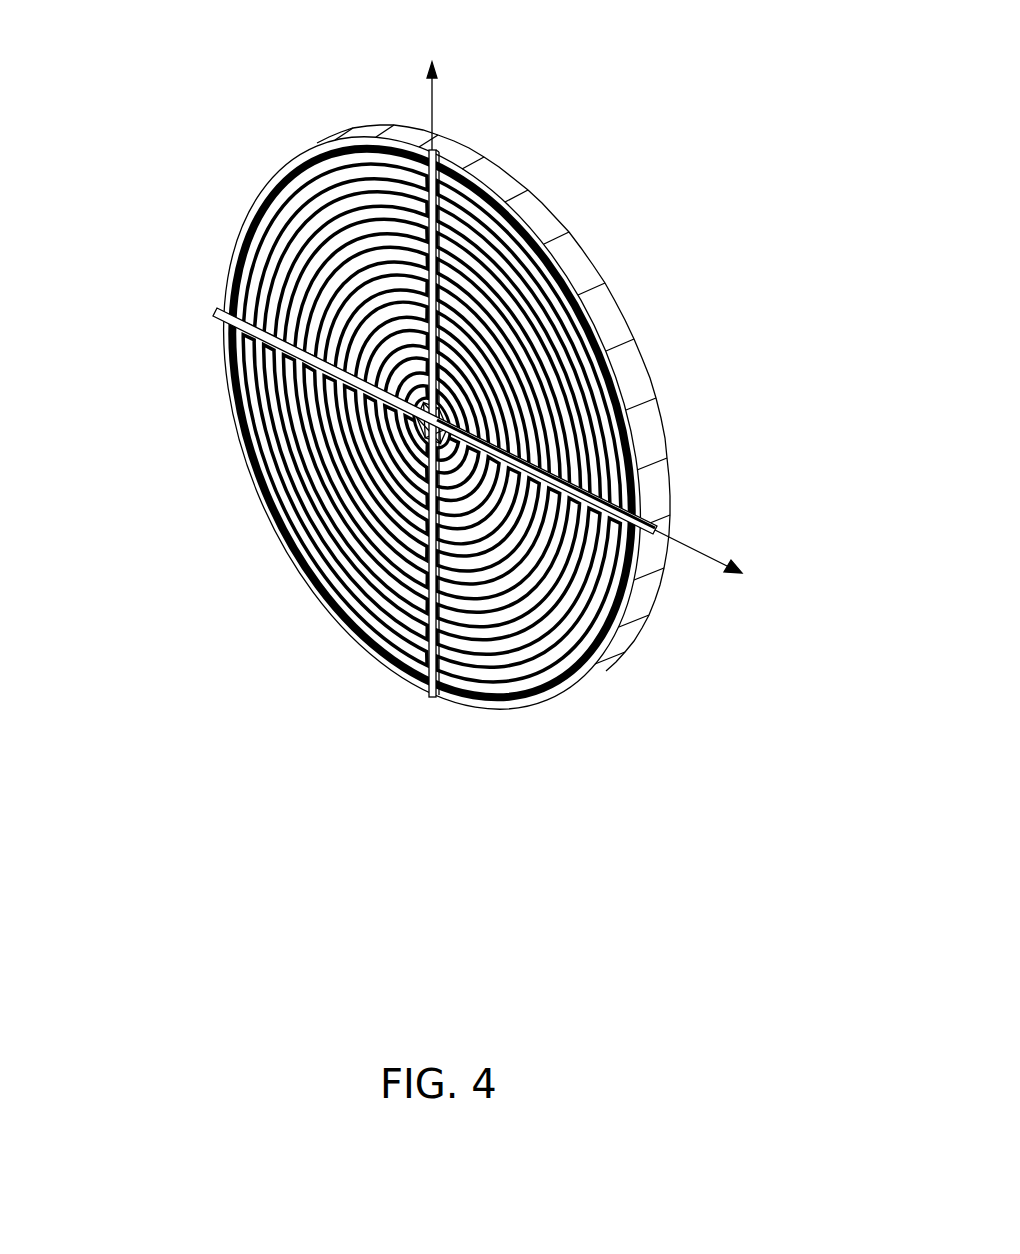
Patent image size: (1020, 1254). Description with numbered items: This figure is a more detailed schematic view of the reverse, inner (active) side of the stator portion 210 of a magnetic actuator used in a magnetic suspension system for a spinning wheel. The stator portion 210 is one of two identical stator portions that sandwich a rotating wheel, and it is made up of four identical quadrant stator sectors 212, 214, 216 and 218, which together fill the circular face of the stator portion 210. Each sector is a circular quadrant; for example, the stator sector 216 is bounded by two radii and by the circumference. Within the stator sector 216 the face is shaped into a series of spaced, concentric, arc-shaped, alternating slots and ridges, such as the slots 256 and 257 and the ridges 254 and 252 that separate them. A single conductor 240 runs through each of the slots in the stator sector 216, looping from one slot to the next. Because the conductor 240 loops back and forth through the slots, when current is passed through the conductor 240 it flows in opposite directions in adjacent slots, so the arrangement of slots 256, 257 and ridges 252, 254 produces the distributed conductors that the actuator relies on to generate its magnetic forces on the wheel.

The stator portion 210 is at (490, 414).
The quadrant stator sector 212 is at (377, 647).
The quadrant stator sector 214 is at (343, 130).
The quadrant stator sector 216 is at (640, 380).
The quadrant stator sector 218 is at (590, 677).
The conductor 240 is at (450, 135).
The ridge 252 is at (570, 288).
The ridge 254 is at (587, 313).
The slot 256 is at (548, 217).
The slot 257 is at (478, 240).